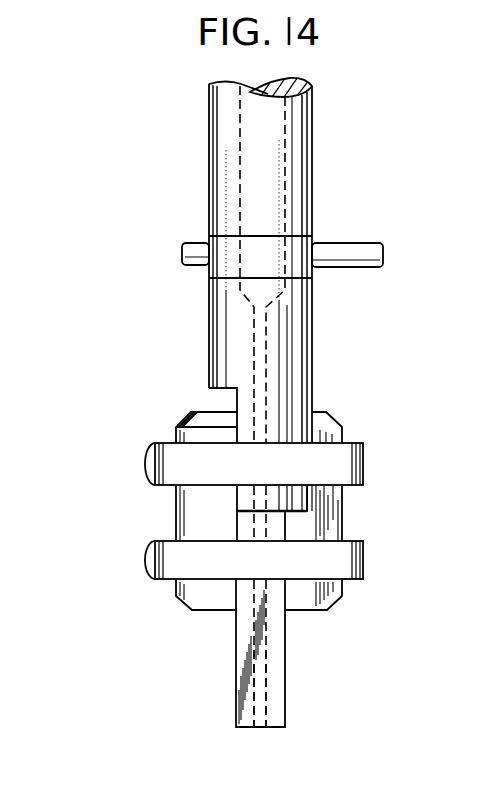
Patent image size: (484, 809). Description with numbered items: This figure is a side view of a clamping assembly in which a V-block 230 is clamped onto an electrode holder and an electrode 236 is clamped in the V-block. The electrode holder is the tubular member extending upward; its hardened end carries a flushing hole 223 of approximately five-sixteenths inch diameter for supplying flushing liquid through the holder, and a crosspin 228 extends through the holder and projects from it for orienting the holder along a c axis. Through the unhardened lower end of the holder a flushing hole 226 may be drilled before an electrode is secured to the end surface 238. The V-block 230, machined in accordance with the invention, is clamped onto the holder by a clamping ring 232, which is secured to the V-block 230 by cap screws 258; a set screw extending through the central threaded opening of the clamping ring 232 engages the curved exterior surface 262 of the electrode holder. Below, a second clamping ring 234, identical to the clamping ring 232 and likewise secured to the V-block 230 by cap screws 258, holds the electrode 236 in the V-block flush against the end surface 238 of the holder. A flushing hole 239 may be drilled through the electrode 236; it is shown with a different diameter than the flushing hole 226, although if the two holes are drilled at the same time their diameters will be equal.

The flushing hole 223 is at (266, 126).
The flushing hole 226 is at (255, 330).
The crosspin 228 is at (350, 253).
The V-block 230 is at (163, 514).
The clamping ring 232 is at (170, 450).
The clamping ring 234 is at (175, 572).
The electrode 236 is at (275, 655).
The end surface 238 is at (295, 512).
The flushing hole 239 is at (255, 690).
The cap screws 258 is at (148, 462).
The curved exterior surface 262 is at (308, 430).